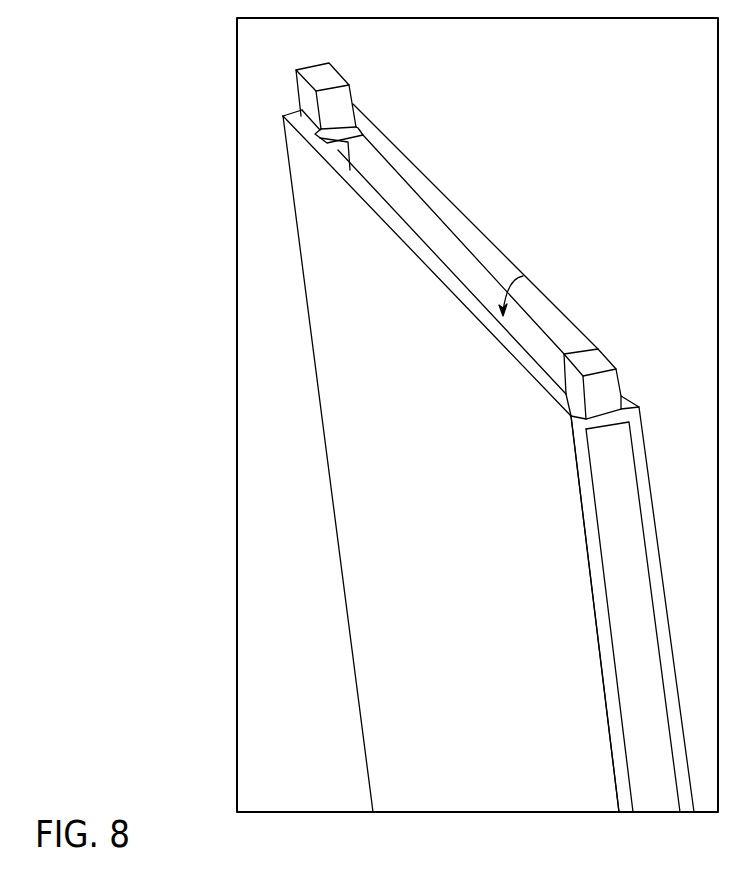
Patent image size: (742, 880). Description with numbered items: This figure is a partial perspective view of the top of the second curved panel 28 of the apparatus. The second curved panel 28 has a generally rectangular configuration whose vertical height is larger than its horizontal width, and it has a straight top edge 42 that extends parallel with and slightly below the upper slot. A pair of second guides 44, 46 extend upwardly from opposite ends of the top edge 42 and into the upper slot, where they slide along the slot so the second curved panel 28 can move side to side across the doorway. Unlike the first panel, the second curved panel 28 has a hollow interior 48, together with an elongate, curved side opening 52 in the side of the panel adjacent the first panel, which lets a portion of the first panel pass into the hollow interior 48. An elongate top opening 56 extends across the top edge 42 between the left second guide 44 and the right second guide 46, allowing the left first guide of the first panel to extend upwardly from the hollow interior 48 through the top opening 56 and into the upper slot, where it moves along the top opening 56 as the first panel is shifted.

The second curved panel 28 is at (337, 382).
The top edge 42 is at (398, 230).
The left second guide 44 is at (310, 97).
The right second guide 46 is at (608, 381).
The hollow interior 48 is at (620, 500).
The side opening 52 is at (622, 572).
The top opening 56 is at (523, 276).